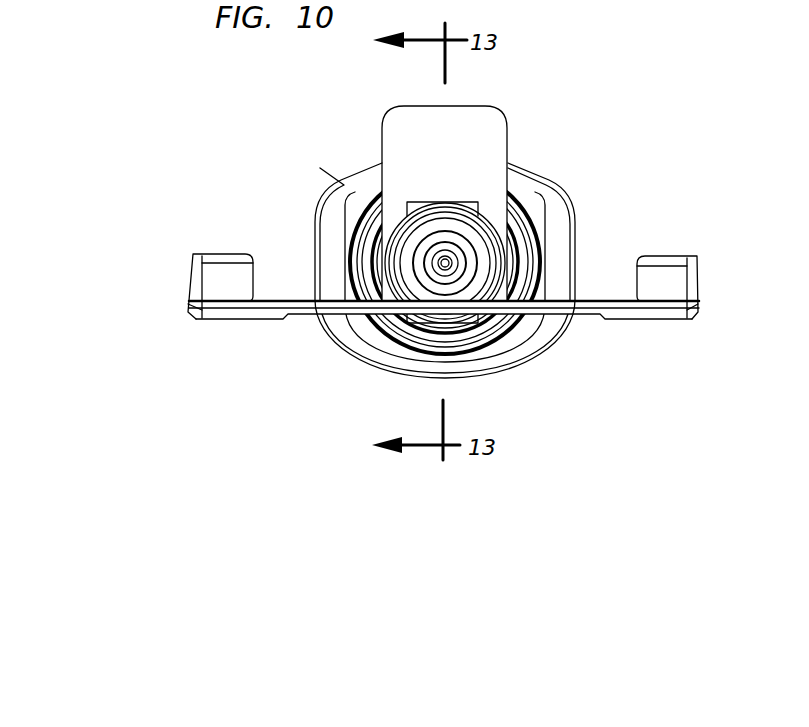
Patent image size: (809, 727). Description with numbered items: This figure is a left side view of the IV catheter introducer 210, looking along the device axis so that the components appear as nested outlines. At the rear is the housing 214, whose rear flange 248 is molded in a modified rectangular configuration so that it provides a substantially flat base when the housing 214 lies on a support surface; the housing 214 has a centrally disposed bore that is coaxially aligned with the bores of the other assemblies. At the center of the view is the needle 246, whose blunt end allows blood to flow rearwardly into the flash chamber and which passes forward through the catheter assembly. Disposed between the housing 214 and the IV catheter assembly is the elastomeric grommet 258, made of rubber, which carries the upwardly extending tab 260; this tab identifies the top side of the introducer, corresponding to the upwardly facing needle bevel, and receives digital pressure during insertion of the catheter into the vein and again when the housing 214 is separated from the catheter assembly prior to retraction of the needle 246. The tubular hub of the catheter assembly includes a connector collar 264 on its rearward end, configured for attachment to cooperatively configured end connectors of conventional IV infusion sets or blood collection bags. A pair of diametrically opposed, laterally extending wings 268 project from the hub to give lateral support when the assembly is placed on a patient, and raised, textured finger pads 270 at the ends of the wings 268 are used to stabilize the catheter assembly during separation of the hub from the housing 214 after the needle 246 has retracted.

The IV catheter introducer 210 is at (335, 118).
The housing 214 is at (523, 370).
The needle 246 is at (440, 258).
The rear flange 248 is at (552, 218).
The elastomeric grommet 258 is at (520, 145).
The upwardly extending tab 260 is at (473, 118).
The connector collar 264 is at (422, 203).
The wings 268 is at (283, 300).
The finger pads 270 is at (215, 260).